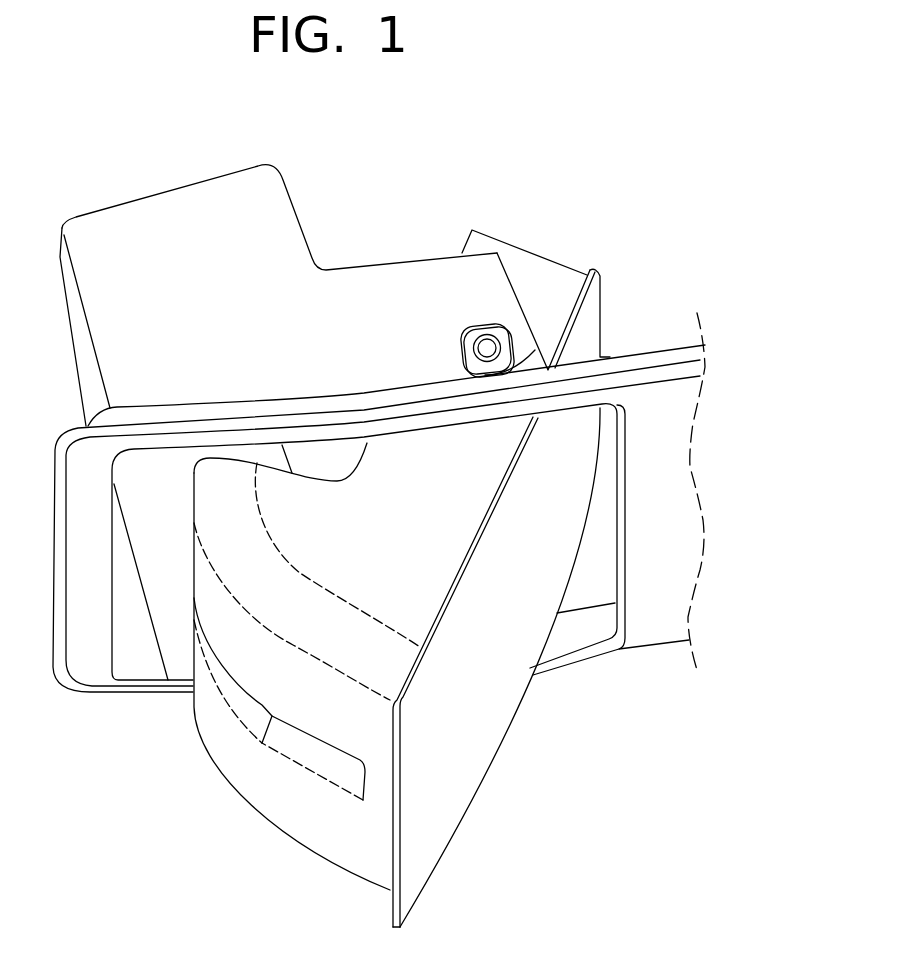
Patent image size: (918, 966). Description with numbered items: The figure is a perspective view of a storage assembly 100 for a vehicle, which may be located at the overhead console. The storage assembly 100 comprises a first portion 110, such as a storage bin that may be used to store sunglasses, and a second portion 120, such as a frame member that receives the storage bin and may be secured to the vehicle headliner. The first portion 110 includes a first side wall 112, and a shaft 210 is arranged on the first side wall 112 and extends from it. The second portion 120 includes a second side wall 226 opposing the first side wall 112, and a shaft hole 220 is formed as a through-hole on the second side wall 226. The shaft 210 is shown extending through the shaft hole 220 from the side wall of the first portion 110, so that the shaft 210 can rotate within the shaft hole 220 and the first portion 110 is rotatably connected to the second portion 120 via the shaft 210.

The storage assembly 100 is at (505, 157).
The first portion 110 is at (325, 828).
The first side wall 112 is at (453, 492).
The second portion 120 is at (365, 287).
The shaft 210 is at (492, 325).
The shaft hole 220 is at (460, 357).
The second side wall 226 is at (515, 320).